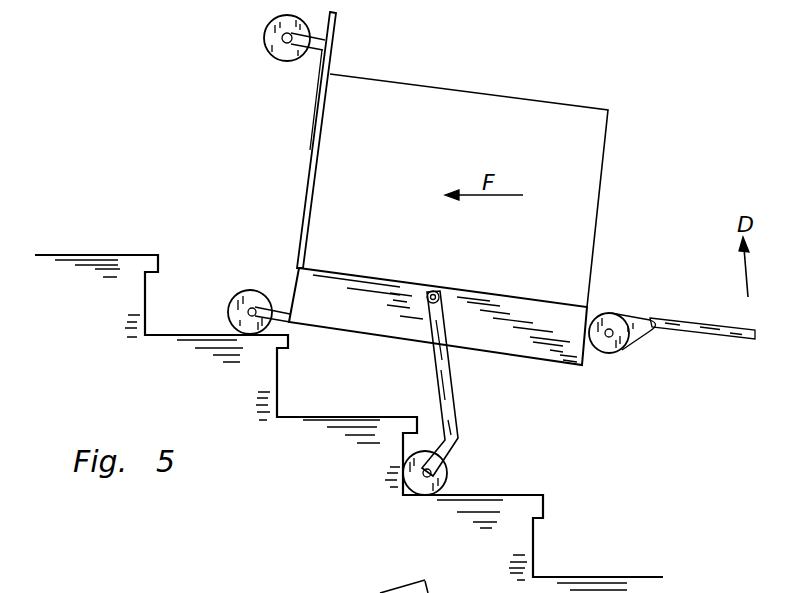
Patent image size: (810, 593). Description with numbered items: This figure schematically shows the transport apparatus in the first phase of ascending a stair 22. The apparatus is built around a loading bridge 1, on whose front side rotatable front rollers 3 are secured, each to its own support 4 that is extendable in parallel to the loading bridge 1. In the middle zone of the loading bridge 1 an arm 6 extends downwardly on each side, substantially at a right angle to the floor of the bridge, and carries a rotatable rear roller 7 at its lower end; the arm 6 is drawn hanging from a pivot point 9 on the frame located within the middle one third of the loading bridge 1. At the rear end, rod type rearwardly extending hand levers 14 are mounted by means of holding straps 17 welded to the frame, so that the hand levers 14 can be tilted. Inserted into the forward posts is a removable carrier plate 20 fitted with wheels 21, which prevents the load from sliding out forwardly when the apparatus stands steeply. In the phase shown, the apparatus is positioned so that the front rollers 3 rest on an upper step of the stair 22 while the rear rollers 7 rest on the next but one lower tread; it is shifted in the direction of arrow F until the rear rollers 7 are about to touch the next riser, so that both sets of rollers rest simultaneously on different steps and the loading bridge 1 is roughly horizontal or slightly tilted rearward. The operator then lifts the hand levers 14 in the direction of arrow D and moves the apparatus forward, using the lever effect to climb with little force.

The loading bridge 1 is at (522, 305).
The front rollers 3 is at (254, 292).
The support 4 is at (278, 306).
The arm 6 is at (436, 370).
The rear rollers 7 is at (447, 477).
The pivot 9 is at (438, 291).
The hand levers 14 is at (697, 320).
The holding straps 17 is at (613, 315).
The carrier plate 20 is at (318, 153).
The wheels 21 is at (272, 55).
The stair 22 is at (556, 523).